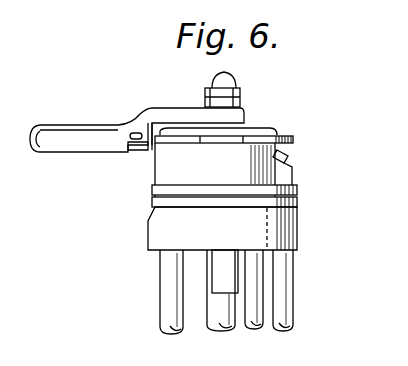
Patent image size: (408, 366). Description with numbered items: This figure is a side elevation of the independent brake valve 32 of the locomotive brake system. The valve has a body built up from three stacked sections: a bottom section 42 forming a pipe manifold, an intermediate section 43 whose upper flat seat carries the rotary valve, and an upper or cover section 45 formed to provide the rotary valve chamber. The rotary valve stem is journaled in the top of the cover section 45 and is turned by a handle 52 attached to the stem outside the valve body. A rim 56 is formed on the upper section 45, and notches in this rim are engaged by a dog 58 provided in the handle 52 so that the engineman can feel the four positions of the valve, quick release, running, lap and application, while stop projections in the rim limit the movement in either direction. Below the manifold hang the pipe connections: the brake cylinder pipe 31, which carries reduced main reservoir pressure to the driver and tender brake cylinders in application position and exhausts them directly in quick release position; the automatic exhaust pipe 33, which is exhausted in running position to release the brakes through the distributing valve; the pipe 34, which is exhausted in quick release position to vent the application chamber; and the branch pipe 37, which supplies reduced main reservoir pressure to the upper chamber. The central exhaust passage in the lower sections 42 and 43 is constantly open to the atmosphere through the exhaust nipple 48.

The handle 52 is at (137, 112).
The dog 58 is at (144, 153).
The upper or cover section 45 is at (223, 164).
The rim 56 is at (295, 141).
The intermediate section 43 is at (299, 202).
The independent brake valve 32 is at (208, 188).
The bottom section 42 is at (222, 228).
The exhaust nipple 48 is at (225, 271).
The branch pipe 37 is at (165, 293).
The automatic exhaust pipe 33 is at (283, 283).
The brake cylinder pipe 31 is at (216, 325).
The pipe 34 is at (252, 325).